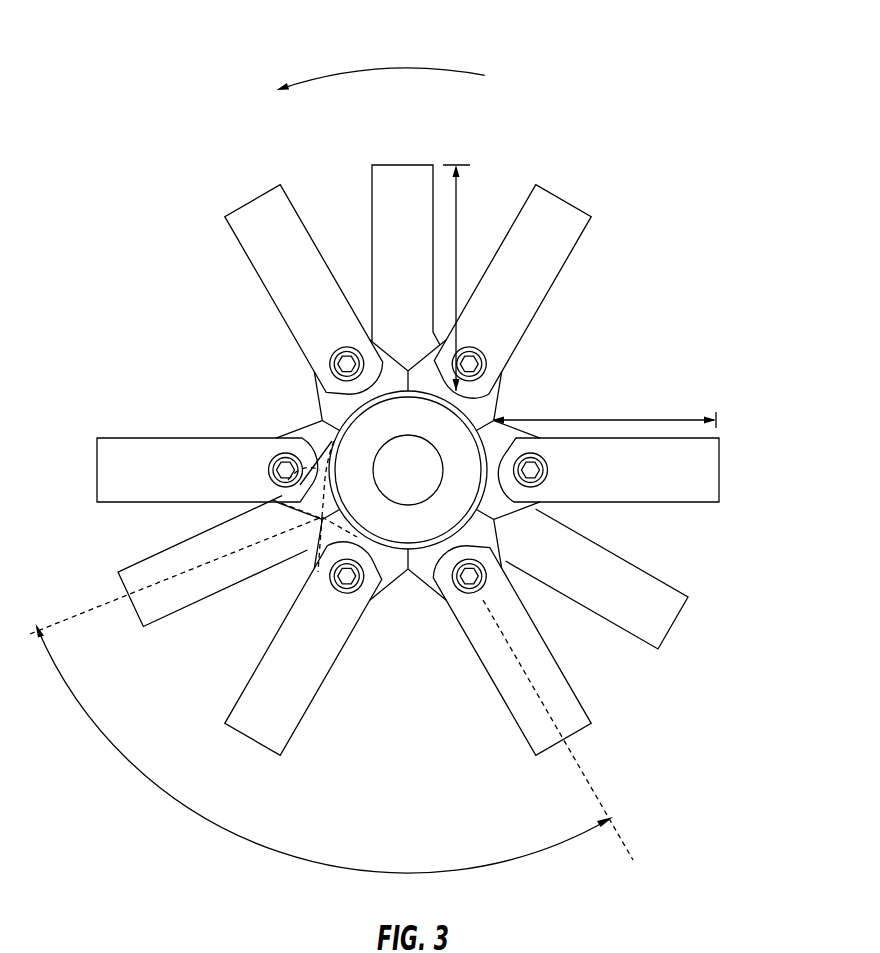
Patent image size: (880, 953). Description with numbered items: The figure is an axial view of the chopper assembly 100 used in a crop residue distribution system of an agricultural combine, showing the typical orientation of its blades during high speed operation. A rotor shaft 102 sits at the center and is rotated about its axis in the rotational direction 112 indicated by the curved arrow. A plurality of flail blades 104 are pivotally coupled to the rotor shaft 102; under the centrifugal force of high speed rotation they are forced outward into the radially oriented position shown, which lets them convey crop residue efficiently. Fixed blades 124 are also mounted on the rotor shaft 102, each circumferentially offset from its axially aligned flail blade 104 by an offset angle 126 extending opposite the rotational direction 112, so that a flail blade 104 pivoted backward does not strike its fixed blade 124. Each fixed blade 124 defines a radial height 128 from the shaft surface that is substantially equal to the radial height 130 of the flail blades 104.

The chopper assembly 100 is at (693, 70).
The rotor shaft 102 is at (424, 483).
The flail blade 104 is at (237, 228).
The rotational direction 112 is at (366, 73).
The fixed blade 124 is at (382, 176).
The offset angle 126 is at (222, 838).
The radial height of fixed blade 128 is at (457, 207).
The radial height of flail blade 130 is at (593, 419).